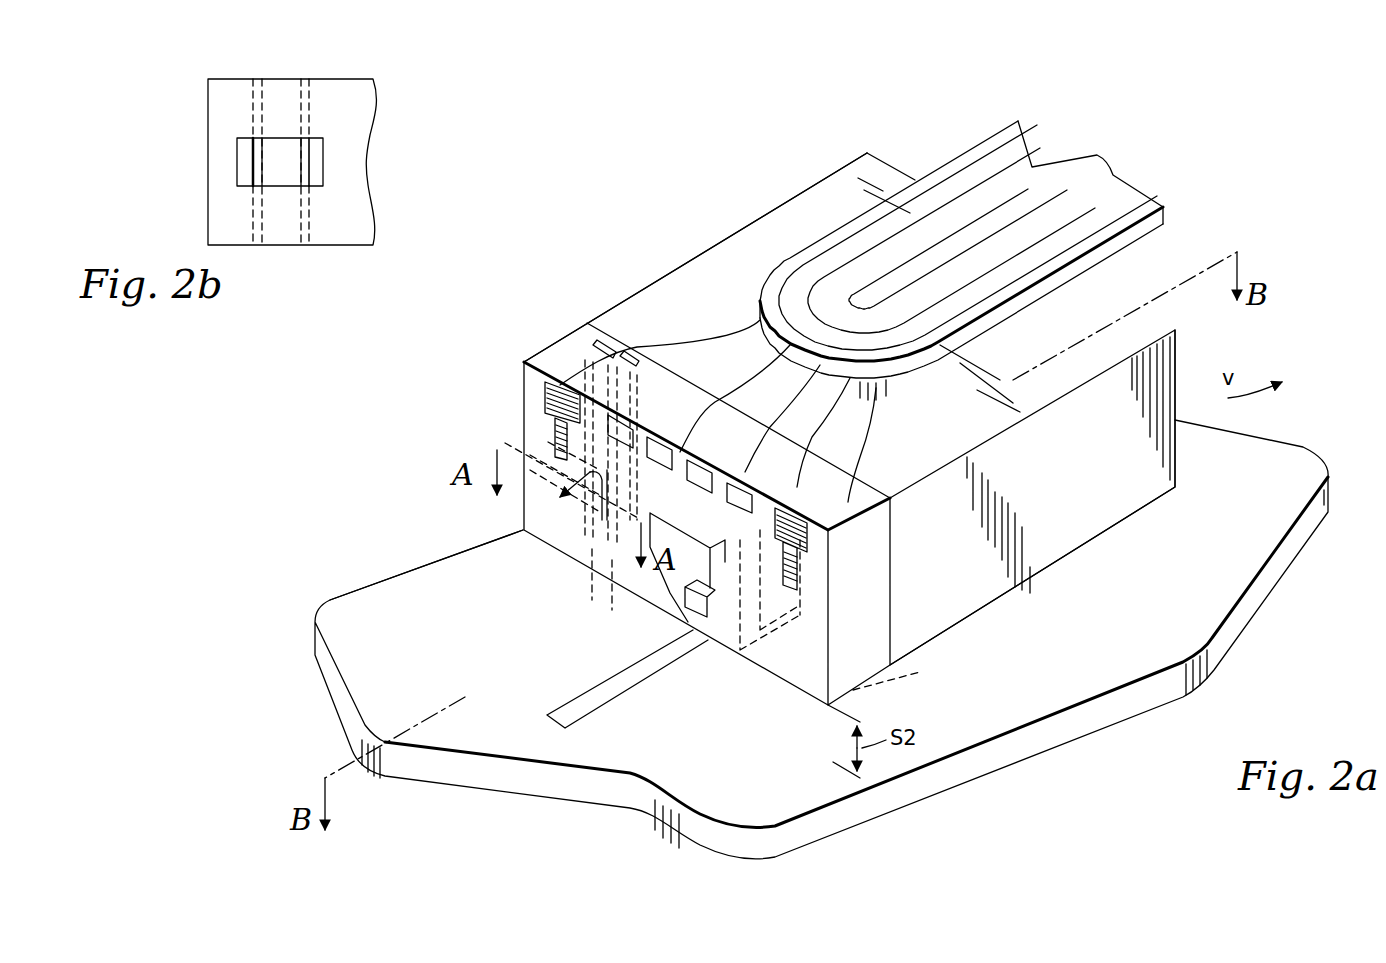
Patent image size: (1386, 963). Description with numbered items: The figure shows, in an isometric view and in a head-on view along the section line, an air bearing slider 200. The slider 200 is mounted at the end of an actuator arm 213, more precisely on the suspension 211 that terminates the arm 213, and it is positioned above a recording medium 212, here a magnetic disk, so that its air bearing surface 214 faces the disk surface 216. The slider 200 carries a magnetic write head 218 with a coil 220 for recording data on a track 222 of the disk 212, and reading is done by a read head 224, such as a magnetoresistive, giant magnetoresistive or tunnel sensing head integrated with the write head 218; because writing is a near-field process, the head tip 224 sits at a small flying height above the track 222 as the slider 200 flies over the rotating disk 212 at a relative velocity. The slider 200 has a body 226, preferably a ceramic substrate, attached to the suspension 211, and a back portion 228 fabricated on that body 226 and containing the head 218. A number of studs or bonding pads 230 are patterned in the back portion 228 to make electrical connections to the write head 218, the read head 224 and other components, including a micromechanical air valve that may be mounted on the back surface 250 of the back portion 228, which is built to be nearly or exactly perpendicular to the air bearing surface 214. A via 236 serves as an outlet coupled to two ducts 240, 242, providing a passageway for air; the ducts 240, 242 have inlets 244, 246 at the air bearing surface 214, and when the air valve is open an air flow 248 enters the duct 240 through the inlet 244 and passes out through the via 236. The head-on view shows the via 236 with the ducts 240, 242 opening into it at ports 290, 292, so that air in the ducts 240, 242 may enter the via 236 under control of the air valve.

In FIG. 2B, the air bearing slider 200 is at (158, 86).
In FIG. 2A, the air bearing slider 200 is at (410, 410).
In FIG. 2A, the suspension 211 is at (948, 166).
In FIG. 2A, the recording medium 212 is at (1045, 735).
In FIG. 2A, the actuator arm 213 is at (1077, 150).
In FIG. 2B, the air bearing surface 214 is at (348, 250).
In FIG. 2A, the air bearing surface 214 is at (1135, 508).
In FIG. 2A, the disk surface 216 is at (385, 590).
In FIG. 2A, the write head 218 is at (655, 570).
In FIG. 2A, the coil 220 is at (742, 652).
In FIG. 2A, the track 222 is at (577, 697).
In FIG. 2A, the read head 224 is at (672, 598).
In FIG. 2A, the body 226 is at (1050, 543).
In FIG. 2A, the back portion 228 is at (553, 342).
In FIG. 2A, the bonding pads 230 is at (548, 400).
In FIG. 2B, the via 236 is at (322, 172).
In FIG. 2A, the via 236 is at (548, 442).
In FIG. 2B, the duct 240 is at (253, 78).
In FIG. 2A, the duct 240 is at (608, 352).
In FIG. 2B, the duct 242 is at (308, 78).
In FIG. 2A, the duct 242 is at (626, 352).
In FIG. 2B, the inlet 244 is at (256, 247).
In FIG. 2A, the inlet 244 is at (592, 549).
In FIG. 2B, the inlet 246 is at (305, 247).
In FIG. 2A, the inlet 246 is at (612, 560).
In FIG. 2A, the air flow 248 is at (535, 515).
In FIG. 2A, the back surface 250 is at (548, 540).
In FIG. 2B, the port 290 is at (260, 172).
In FIG. 2B, the port 292 is at (310, 157).